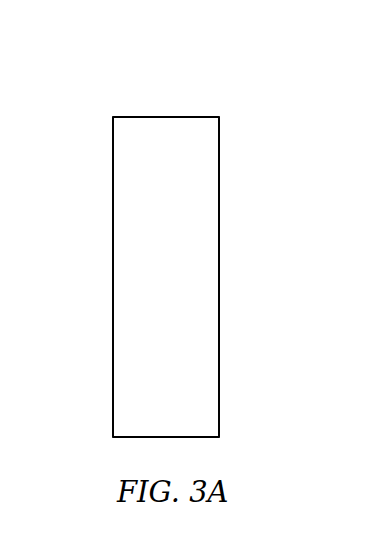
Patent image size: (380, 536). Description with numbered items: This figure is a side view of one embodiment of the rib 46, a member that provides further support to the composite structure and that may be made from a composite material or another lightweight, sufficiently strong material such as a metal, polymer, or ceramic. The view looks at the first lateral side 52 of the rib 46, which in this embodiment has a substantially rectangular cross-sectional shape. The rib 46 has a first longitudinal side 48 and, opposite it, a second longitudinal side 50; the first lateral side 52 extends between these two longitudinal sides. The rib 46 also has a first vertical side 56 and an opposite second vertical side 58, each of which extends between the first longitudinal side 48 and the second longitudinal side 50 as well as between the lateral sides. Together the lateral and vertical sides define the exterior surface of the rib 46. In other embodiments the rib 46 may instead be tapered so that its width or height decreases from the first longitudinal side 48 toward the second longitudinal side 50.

The rib 46 is at (248, 138).
The first longitudinal side 48 is at (225, 243).
The second longitudinal side 50 is at (107, 281).
The first lateral side 52 is at (193, 309).
The first vertical side 56 is at (162, 108).
The second vertical side 58 is at (211, 442).